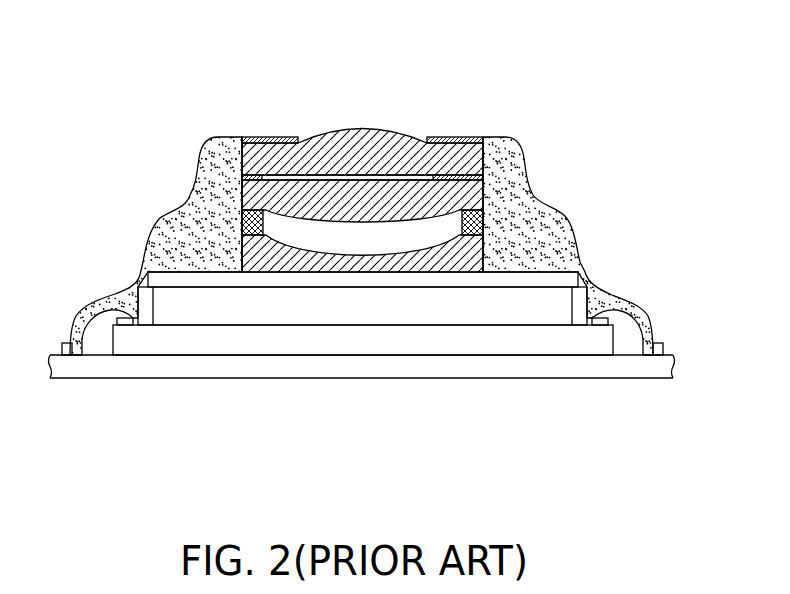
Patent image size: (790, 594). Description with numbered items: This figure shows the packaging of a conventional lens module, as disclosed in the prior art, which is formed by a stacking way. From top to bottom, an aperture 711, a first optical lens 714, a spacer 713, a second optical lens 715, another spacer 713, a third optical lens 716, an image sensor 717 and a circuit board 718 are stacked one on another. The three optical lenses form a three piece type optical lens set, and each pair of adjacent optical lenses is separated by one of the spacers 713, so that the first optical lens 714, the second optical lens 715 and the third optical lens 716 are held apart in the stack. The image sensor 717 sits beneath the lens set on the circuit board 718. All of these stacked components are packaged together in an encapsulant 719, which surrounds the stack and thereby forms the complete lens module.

The aperture 711 is at (481, 135).
The spacer 713 is at (470, 178).
The first optical lens 714 is at (472, 156).
The second optical lens 715 is at (470, 198).
The third optical lens 716 is at (470, 254).
The image sensor 717 is at (522, 340).
The circuit board 718 is at (632, 367).
The encapsulant 719 is at (540, 213).